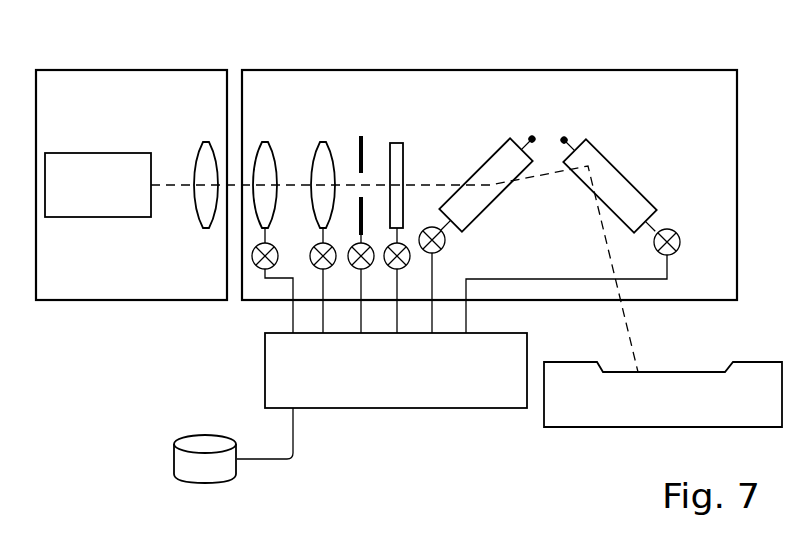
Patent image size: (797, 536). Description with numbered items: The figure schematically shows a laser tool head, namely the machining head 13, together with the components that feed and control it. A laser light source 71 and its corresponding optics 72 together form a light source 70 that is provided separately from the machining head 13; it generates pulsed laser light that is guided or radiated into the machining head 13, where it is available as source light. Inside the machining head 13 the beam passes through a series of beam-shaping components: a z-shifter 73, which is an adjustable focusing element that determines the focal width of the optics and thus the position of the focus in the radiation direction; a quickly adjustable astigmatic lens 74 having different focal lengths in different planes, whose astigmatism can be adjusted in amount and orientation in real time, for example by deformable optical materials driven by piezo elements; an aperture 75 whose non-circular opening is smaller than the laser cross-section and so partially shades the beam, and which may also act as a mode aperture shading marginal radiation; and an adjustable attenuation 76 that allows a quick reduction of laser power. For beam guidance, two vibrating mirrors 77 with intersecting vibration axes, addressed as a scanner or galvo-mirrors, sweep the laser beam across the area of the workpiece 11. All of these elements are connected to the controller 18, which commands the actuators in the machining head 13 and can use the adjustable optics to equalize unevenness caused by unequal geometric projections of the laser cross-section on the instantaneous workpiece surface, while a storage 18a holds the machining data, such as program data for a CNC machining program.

The sample / substrate 11 is at (666, 416).
The machining head 13 is at (448, 85).
The controller 18 is at (402, 389).
The storage 18a is at (180, 466).
The light source 70 is at (114, 292).
The laser light source 71 is at (90, 208).
The optics 72 is at (201, 200).
The z-shifter 73 is at (269, 162).
The astigmatic lens 74 is at (327, 162).
The aperture 75 is at (363, 160).
The adjustable attenuation 76 is at (400, 160).
The vibrating mirrors 77 is at (491, 165).